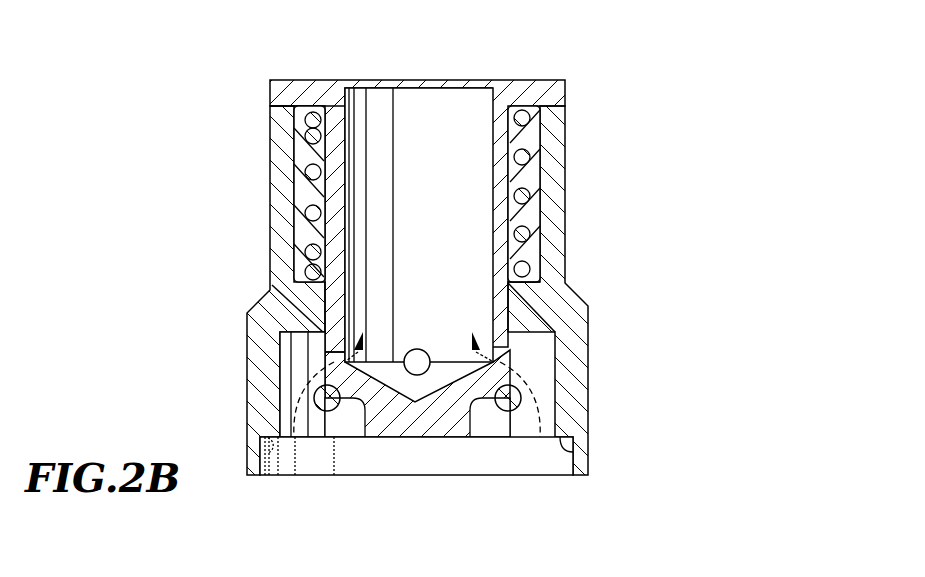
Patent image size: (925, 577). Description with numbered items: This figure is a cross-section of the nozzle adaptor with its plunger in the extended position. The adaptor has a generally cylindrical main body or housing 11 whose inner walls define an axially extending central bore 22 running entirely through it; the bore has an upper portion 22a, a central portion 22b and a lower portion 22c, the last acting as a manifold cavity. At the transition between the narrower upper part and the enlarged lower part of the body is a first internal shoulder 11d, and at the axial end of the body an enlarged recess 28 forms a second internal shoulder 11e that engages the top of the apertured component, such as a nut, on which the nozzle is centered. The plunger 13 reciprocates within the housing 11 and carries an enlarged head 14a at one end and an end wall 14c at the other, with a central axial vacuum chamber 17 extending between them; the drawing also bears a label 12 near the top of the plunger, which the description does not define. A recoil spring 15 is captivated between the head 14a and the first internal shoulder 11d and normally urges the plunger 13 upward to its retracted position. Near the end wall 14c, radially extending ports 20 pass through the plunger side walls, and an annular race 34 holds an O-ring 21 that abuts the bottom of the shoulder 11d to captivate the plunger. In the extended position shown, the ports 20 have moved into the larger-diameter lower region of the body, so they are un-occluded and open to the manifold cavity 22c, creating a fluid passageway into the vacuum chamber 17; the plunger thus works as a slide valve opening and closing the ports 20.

The main body/housing 11 is at (565, 212).
The first internal shoulder 11d is at (310, 323).
The second internal shoulder 11e is at (595, 486).
The piston bore 12 is at (377, 80).
The plunger 13 is at (533, 80).
The enlarged head 14a is at (272, 93).
The end wall 14c is at (383, 529).
The recoil spring 15 is at (305, 172).
The central axial vacuum chamber 17 is at (372, 212).
The radially-extending ports 20 is at (340, 360).
The O-ring 21 is at (538, 413).
The central bore 22 is at (515, 177).
The upper portion of central bore 22a is at (533, 228).
The central portion of central bore 22b is at (503, 297).
The lower portion of central bore 22c is at (298, 400).
The enlarged recess 28 is at (150, 0).
The annular race 34 is at (344, 403).